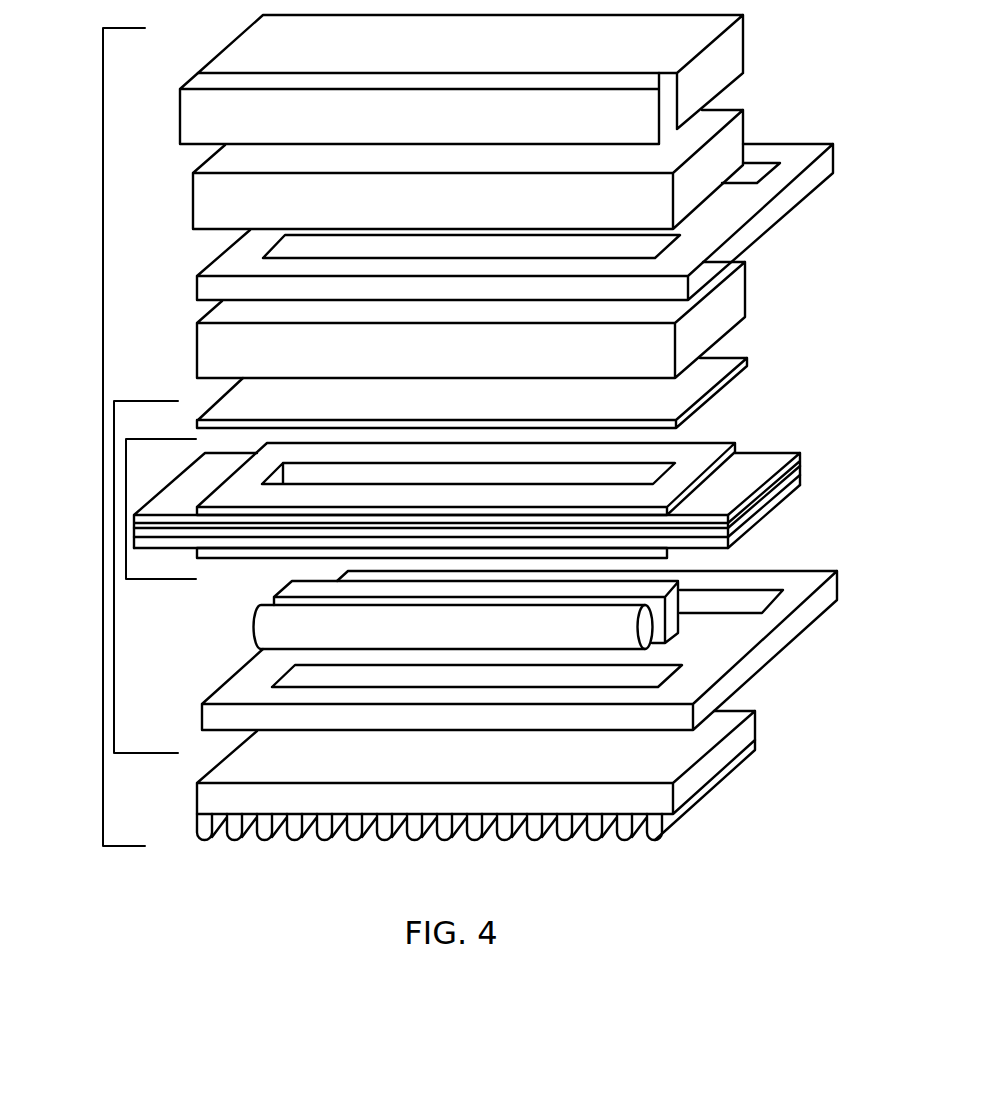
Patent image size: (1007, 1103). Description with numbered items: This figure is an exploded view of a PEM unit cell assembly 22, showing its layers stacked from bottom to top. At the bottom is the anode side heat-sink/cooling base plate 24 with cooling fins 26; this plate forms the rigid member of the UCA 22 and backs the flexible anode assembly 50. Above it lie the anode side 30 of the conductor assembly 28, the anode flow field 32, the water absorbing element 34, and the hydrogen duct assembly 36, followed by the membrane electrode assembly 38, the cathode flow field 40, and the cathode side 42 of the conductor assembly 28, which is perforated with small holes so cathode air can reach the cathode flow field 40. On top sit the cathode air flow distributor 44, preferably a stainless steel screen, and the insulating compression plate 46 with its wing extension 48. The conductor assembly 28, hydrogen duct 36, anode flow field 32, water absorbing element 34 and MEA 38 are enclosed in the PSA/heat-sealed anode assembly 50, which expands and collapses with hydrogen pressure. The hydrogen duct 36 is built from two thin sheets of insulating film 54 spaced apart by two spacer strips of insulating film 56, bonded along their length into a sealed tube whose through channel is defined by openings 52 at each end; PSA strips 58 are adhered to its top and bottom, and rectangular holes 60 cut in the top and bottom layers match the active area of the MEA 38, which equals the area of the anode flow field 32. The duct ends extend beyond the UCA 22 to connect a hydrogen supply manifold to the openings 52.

The unit cell assembly 22 is at (103, 405).
The anode side heat-sink/cooling base plate 24 is at (752, 727).
The cooling fins 26 is at (695, 798).
The conductor assembly 28 is at (777, 211).
The anode side of the conductor assembly 30 is at (762, 165).
The anode flow field 32 is at (672, 613).
The water absorbing element 34 is at (253, 633).
The hydrogen duct assembly 36 is at (145, 579).
The membrane electrode assembly 38 is at (723, 383).
The cathode flow field 40 is at (735, 309).
The cathode side of the conductor assembly 42 is at (667, 252).
The cathode air flow distributor 44 is at (743, 128).
The insulating compression plate 46 is at (743, 52).
The wing extension 48 is at (180, 115).
The anode assembly 50 is at (165, 400).
The openings 52 is at (770, 498).
The sheets of insulating film 54 is at (800, 461).
The spacer strips of insulating film 56 is at (800, 473).
The PSA strips 58 is at (735, 451).
The rectangular holes 60 is at (661, 472).